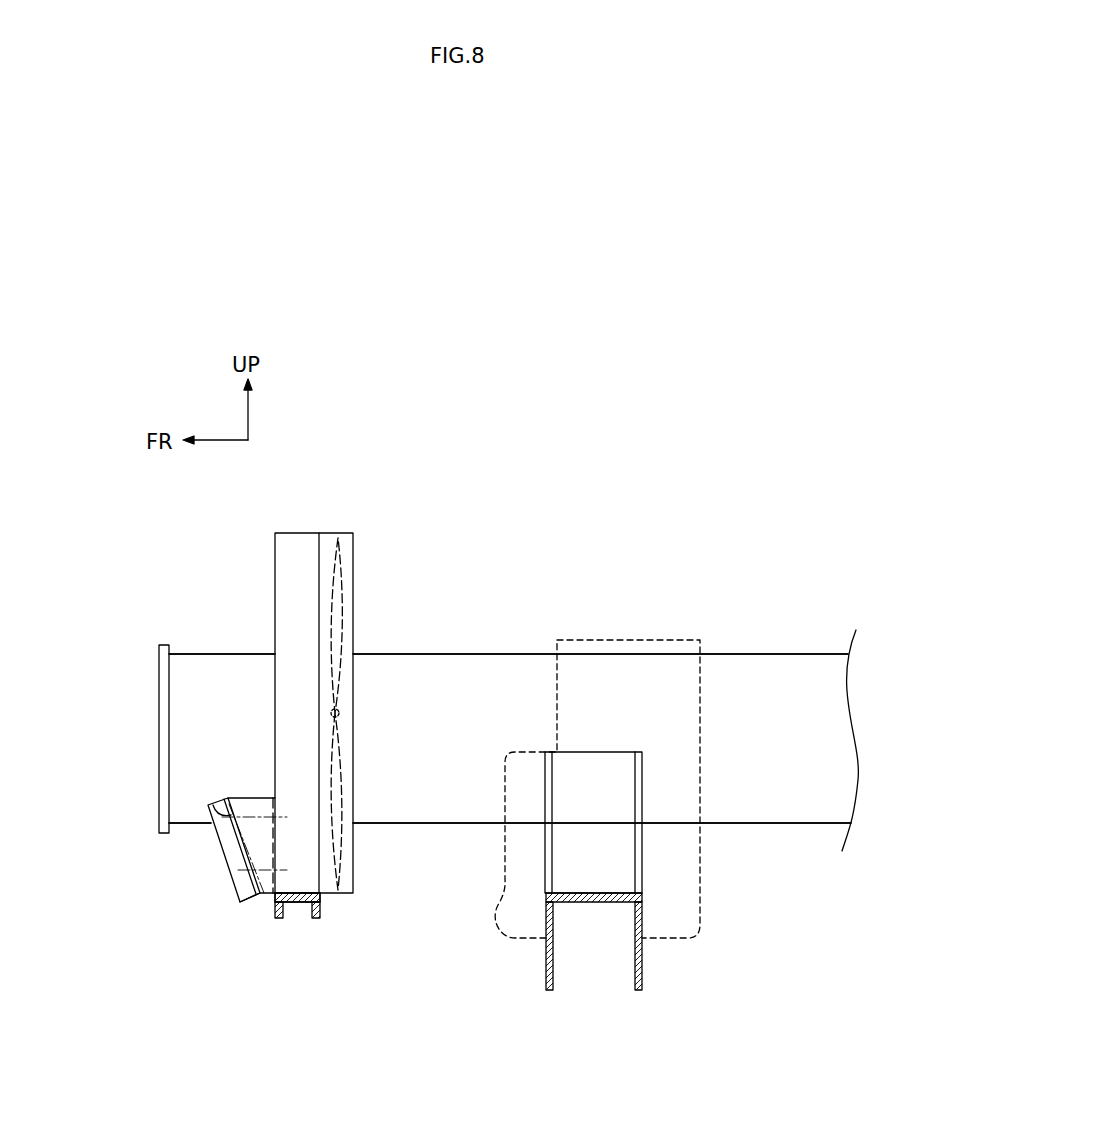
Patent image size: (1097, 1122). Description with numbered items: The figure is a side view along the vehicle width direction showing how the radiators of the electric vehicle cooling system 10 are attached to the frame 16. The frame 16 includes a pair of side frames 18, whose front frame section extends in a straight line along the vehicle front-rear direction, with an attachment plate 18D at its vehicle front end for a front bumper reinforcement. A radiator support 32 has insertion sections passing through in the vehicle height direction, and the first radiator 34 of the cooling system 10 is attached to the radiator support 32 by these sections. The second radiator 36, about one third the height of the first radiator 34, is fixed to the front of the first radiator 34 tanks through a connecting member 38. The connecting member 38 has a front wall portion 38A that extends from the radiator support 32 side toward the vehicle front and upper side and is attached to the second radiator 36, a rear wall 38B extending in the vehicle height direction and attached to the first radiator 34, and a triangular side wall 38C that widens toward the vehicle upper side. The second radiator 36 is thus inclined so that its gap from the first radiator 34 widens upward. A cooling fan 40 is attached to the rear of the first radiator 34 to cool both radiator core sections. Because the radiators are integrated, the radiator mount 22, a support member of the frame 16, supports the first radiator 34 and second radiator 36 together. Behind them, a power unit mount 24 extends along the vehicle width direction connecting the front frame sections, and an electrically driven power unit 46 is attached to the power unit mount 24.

The electric vehicle cooling system 10 is at (370, 499).
The side frame 18 is at (447, 652).
The frame 16 is at (510, 692).
The attachment plate 18D is at (158, 720).
The first radiator 34 is at (298, 548).
The cooling fan 40 is at (345, 540).
The radiator support 32 is at (320, 905).
The radiator mount 22 is at (366, 931).
The second radiator 36 is at (227, 863).
The connecting member 38 is at (248, 797).
The front wall portion 38A is at (218, 800).
The rear wall 38B is at (274, 800).
The side wall 38C is at (268, 897).
The power unit 46 is at (698, 640).
The power unit mount 24 is at (642, 958).